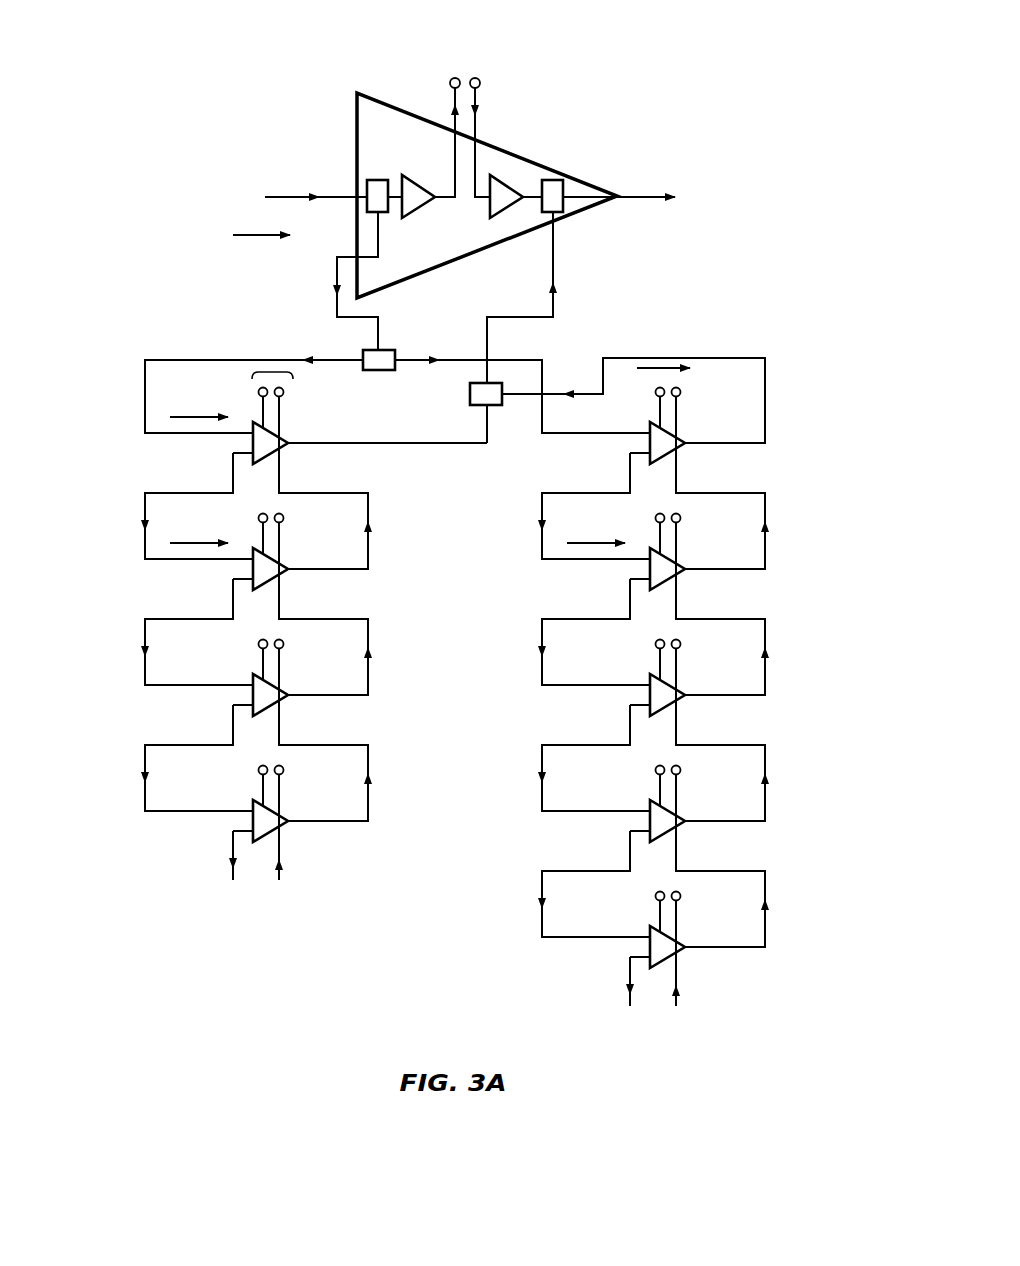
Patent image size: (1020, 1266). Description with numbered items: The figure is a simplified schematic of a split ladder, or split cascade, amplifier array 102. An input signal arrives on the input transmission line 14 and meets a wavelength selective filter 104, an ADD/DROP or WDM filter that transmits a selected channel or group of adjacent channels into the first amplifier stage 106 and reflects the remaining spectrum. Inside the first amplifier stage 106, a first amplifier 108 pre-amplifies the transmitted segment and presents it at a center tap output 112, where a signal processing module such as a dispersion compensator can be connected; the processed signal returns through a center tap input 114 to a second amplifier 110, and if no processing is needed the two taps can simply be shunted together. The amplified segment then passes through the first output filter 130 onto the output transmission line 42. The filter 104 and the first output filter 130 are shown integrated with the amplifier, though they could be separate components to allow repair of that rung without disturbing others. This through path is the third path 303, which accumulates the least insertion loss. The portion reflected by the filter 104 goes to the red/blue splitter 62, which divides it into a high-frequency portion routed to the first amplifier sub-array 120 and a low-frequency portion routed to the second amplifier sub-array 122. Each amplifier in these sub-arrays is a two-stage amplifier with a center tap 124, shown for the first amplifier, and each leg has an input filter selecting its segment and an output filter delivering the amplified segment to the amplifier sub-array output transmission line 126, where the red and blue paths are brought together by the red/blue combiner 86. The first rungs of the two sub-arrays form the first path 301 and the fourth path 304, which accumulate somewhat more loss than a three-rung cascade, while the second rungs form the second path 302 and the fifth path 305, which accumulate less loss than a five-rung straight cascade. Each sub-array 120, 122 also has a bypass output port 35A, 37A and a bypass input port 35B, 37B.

The input transmission line 14 is at (286, 196).
The output transmission line 42 is at (648, 195).
The red/blue splitter 62 is at (378, 372).
The red/blue combiner 86 is at (470, 394).
The amplifier array 102 is at (768, 206).
The wavelength selective filter 104 is at (372, 180).
The first amplifier stage 106 is at (413, 114).
The first amplifier 108 is at (423, 208).
The second amplifier 110 is at (502, 177).
The center tap output 112 is at (455, 78).
The center tap input 114 is at (475, 78).
The first amplifier sub-array 120 is at (92, 517).
The second amplifier sub-array 122 is at (820, 516).
The center tap 124 is at (272, 368).
The amplifier sub-array output transmission line 126 is at (410, 445).
The first output filter 130 is at (552, 180).
The path 1 301 is at (182, 417).
The path 2 302 is at (182, 543).
The path 3 303 is at (258, 237).
The path 4 304 is at (645, 368).
The path 5 305 is at (579, 543).
The bypass output port 35A is at (233, 868).
The bypass input port 35B is at (279, 870).
The bypass output port 37A is at (630, 995).
The bypass input port 37B is at (676, 997).